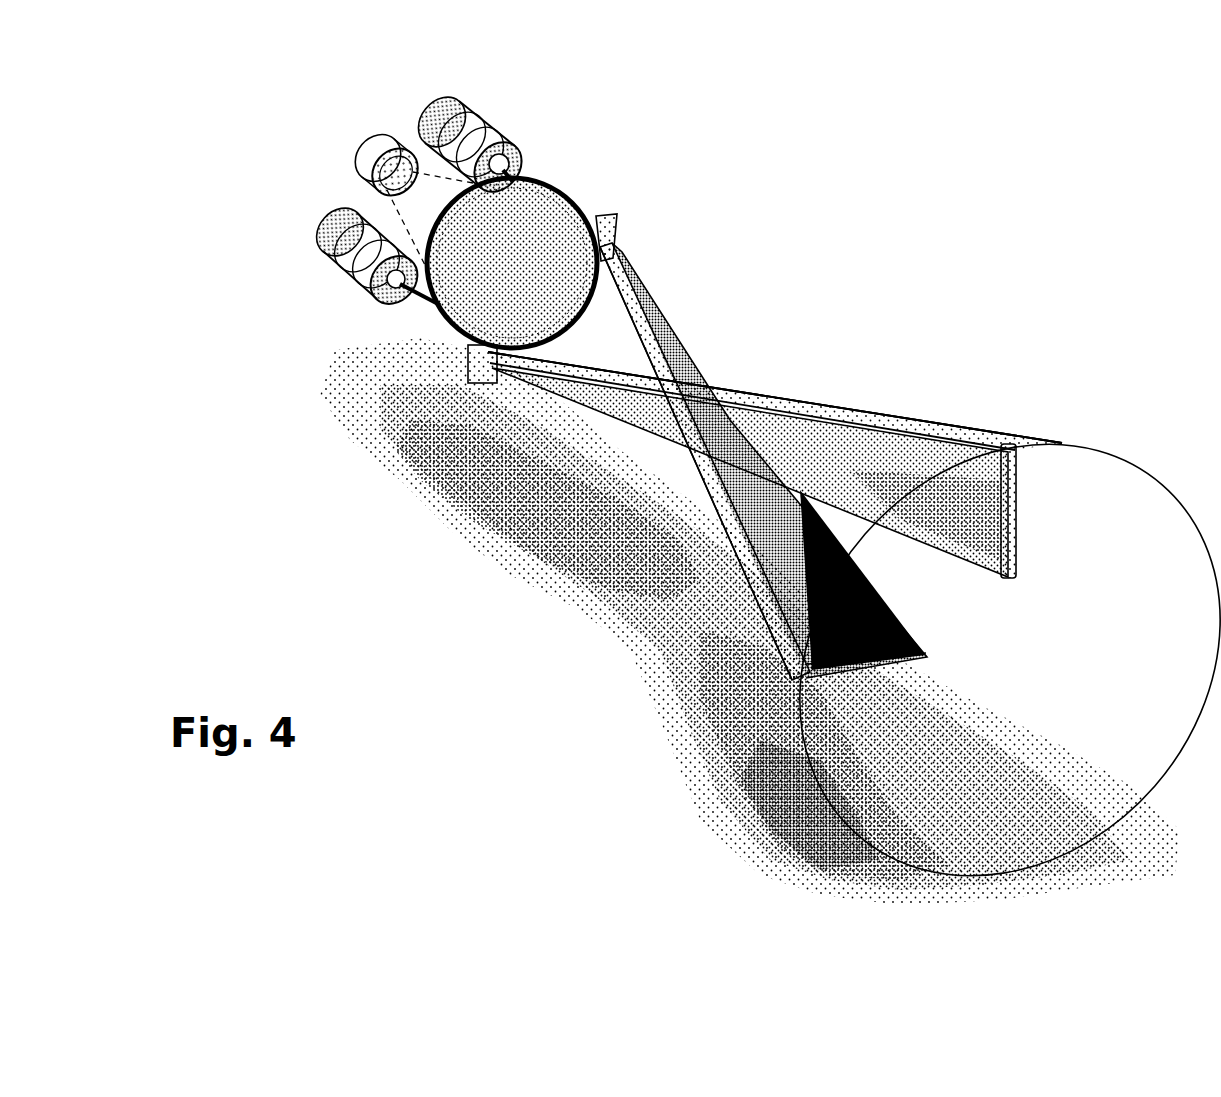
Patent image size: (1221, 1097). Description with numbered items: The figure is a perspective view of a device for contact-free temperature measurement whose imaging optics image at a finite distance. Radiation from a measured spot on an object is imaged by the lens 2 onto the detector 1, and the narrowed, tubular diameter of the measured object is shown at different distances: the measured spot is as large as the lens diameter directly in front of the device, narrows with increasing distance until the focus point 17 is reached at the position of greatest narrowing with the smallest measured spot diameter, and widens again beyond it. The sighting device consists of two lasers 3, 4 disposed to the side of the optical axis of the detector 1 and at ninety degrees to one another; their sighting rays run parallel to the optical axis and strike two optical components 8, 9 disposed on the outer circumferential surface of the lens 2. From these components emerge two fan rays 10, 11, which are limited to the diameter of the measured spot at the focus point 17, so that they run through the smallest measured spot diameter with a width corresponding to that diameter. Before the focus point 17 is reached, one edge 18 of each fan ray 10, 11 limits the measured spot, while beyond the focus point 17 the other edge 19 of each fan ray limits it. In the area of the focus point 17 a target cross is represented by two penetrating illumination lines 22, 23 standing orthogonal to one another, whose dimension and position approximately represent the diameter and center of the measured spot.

The detector 1 is at (372, 160).
The lens 2 is at (520, 318).
The first laser 3 is at (492, 122).
The second laser 4 is at (330, 250).
The optical component 8 is at (607, 227).
The optical component 9 is at (487, 362).
The fan ray 10 is at (887, 467).
The fan ray 11 is at (790, 557).
The focus point 17 is at (722, 392).
The edge 18 is at (668, 322).
The edge 19 is at (885, 418).
The illumination line 22 is at (755, 736).
The illumination line 23 is at (1013, 497).